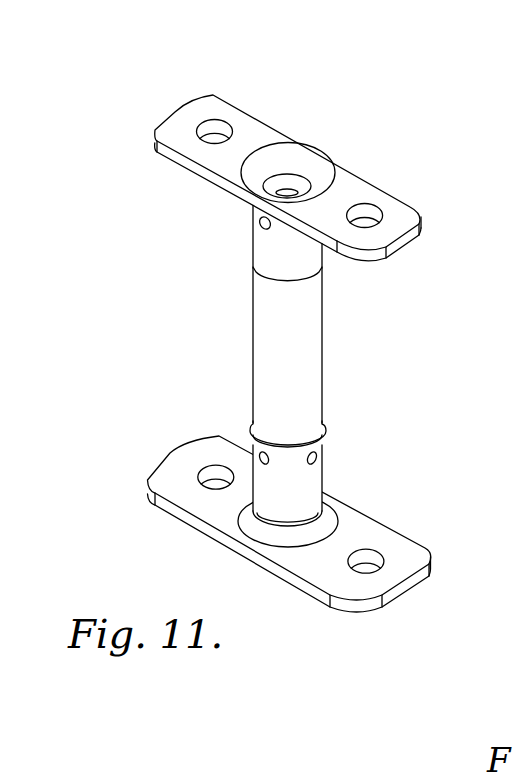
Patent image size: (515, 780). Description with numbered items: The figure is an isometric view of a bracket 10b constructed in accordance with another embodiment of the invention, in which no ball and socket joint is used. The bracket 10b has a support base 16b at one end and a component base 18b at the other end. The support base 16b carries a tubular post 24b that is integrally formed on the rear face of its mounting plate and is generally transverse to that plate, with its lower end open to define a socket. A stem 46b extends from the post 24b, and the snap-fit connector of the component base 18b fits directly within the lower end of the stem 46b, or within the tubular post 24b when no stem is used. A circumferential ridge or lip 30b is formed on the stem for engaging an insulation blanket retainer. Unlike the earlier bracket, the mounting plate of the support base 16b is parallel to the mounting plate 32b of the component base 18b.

The bracket 10b is at (292, 343).
The support base 16b is at (363, 170).
The component base 18b is at (292, 524).
The tubular post 24b is at (265, 255).
The stem 46b is at (327, 338).
The circumferential ridge or lip 30b is at (327, 427).
The mounting plate 32b is at (181, 489).